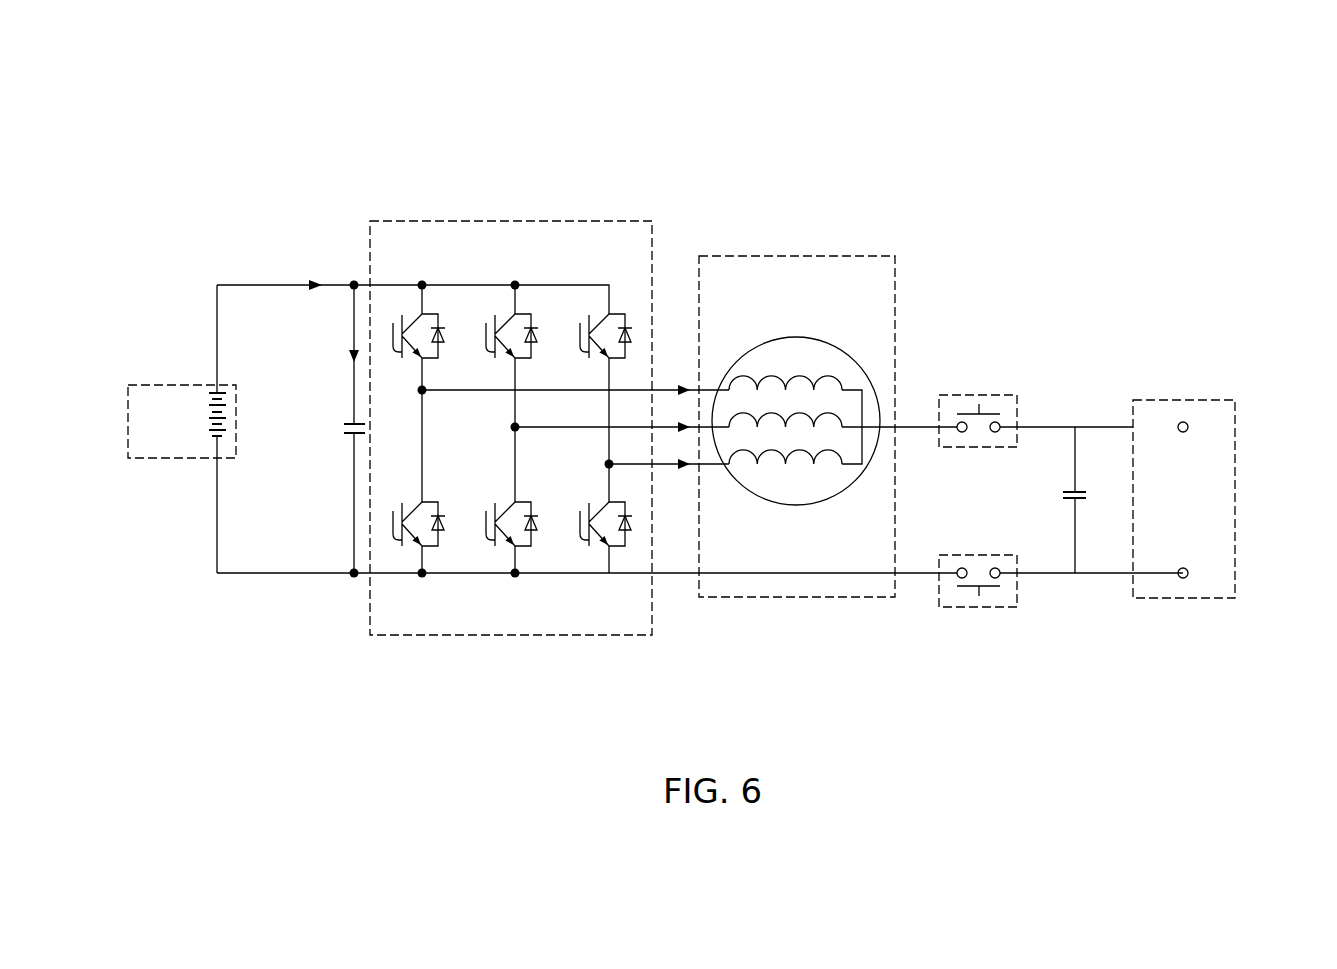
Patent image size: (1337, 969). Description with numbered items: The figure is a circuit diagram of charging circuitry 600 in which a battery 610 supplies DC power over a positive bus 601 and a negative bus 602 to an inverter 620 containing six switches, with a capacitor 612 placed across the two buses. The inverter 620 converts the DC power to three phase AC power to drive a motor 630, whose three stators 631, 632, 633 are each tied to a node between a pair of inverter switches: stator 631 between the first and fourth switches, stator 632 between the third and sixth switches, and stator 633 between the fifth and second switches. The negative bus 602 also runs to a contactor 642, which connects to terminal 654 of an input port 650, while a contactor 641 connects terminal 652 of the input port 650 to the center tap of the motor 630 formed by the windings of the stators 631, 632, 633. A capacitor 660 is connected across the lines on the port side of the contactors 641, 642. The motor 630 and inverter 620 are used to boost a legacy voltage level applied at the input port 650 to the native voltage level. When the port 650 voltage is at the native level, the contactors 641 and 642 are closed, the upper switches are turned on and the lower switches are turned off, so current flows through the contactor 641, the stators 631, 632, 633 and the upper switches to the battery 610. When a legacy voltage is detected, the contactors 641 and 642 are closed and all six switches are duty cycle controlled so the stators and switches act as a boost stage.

The circuitry 600 is at (197, 130).
The positive bus 601 is at (279, 283).
The negative bus 602 is at (287, 575).
The battery 610 is at (157, 385).
The capacitor 612 is at (348, 435).
The inverter 620 is at (505, 221).
The motor 630 is at (830, 391).
The stator 631 is at (806, 374).
The stator 632 is at (834, 413).
The stator 633 is at (800, 452).
The contactor 641 is at (972, 395).
The contactor 642 is at (983, 607).
The input port 650 is at (1227, 501).
The terminal 652 is at (1183, 422).
The terminal 654 is at (1183, 578).
The capacitor 660 is at (1070, 498).